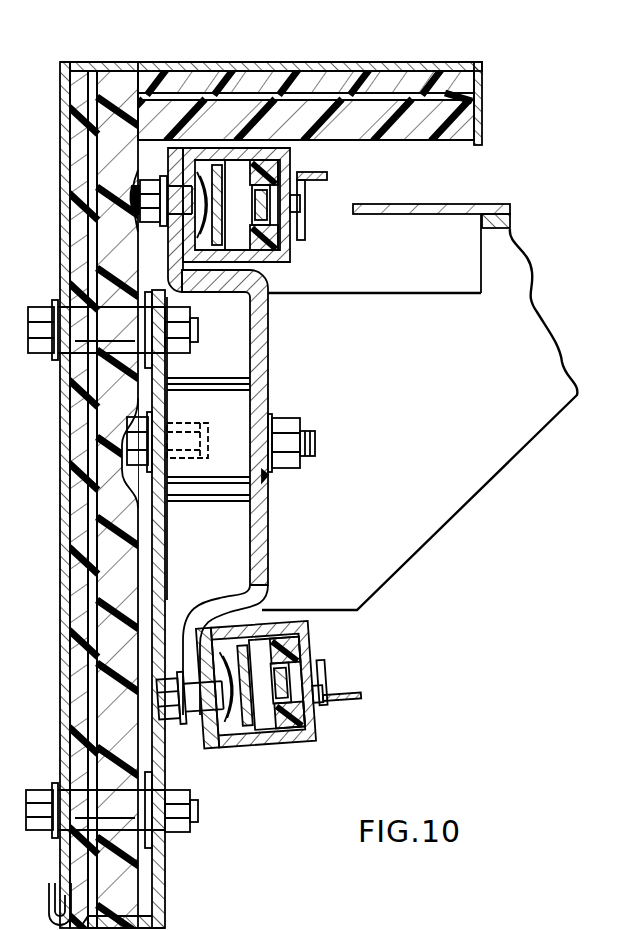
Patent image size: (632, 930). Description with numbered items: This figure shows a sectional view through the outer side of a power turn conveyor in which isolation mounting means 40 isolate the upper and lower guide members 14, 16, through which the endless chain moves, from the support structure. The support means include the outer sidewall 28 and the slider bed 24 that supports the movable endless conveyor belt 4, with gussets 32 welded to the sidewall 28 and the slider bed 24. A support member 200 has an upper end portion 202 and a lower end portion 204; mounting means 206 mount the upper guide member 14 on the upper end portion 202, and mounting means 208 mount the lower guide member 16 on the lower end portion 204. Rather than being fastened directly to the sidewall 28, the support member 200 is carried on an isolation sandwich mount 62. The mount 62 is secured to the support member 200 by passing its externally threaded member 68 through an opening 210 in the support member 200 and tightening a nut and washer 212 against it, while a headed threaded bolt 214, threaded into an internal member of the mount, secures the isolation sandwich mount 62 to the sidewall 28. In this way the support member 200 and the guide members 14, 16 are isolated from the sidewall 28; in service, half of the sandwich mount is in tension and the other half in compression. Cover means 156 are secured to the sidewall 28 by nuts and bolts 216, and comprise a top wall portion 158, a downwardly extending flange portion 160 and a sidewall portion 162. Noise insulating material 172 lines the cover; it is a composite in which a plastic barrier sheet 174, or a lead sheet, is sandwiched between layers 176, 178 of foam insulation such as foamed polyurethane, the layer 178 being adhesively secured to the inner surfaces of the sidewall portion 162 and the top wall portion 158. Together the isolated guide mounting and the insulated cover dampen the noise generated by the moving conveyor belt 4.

The movable endless conveyor belt 4 is at (473, 210).
The upper guide member 14 is at (283, 262).
The lower guide member 16 is at (270, 738).
The slider bed 24 is at (500, 222).
The outer sidewall 28 is at (165, 785).
The gussets 32 is at (440, 508).
The isolation mounting means 40 is at (207, 511).
The isolation sandwich mount 62 is at (235, 412).
The externally threaded member 68 is at (312, 456).
The cover means 156 is at (486, 118).
The top wall portion 158 is at (88, 62).
The downwardly extending flange portion 160 is at (480, 130).
The sidewall portion 162 is at (62, 118).
The noise insulating material 172 is at (393, 144).
The plastic barrier sheet 174 is at (92, 624).
The layer of foam insulation 176 is at (110, 656).
The layer of foam insulation 178 is at (73, 581).
The support member 200 is at (258, 525).
The upper end portion 202 is at (175, 163).
The lower end portion 204 is at (200, 728).
The mounting means 206 is at (152, 221).
The mounting means 208 is at (172, 716).
The opening 210 is at (270, 478).
The nut and washer 212 is at (300, 436).
The headed threaded bolt 214 is at (135, 444).
The nuts and bolts 216 is at (40, 352).